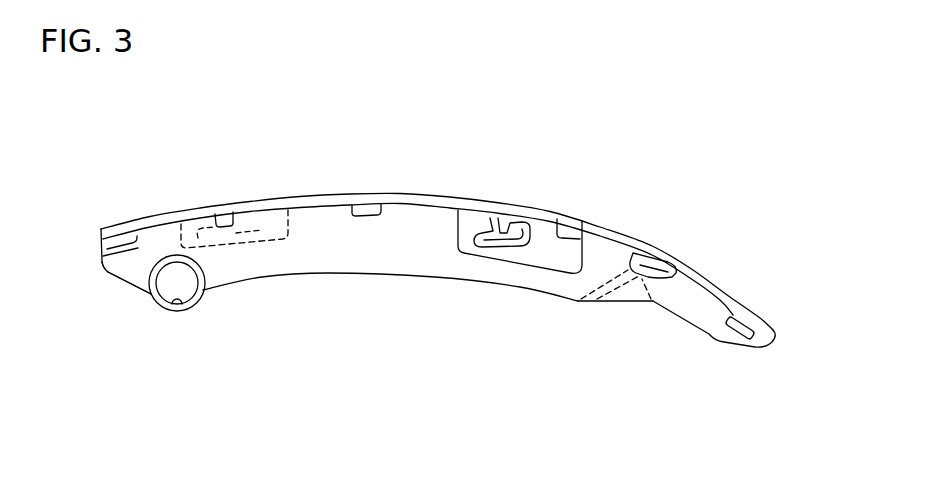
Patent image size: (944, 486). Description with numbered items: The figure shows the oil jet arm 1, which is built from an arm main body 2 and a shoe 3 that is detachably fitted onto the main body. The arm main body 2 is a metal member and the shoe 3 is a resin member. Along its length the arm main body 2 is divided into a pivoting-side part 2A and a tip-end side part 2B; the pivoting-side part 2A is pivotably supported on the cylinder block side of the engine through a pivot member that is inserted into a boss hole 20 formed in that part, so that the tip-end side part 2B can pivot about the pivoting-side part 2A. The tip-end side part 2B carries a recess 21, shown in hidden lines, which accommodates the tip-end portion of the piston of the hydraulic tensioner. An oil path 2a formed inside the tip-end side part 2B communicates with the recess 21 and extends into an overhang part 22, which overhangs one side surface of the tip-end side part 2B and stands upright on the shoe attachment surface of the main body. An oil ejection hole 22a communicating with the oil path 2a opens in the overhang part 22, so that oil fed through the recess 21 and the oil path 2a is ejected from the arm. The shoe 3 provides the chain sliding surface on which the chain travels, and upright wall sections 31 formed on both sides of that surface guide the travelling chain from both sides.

The oil jet arm 1 is at (432, 150).
The arm main body 2 is at (355, 278).
The pivoting-side part 2A is at (126, 276).
The tip-end side part 2B is at (703, 330).
The oil path 2a is at (637, 304).
The boss hole 20 is at (170, 307).
The recess 21 is at (578, 307).
The overhang part 22 is at (689, 271).
The oil ejection hole 22a is at (660, 255).
The shoe 3 is at (150, 208).
The upright wall section 31 is at (320, 195).